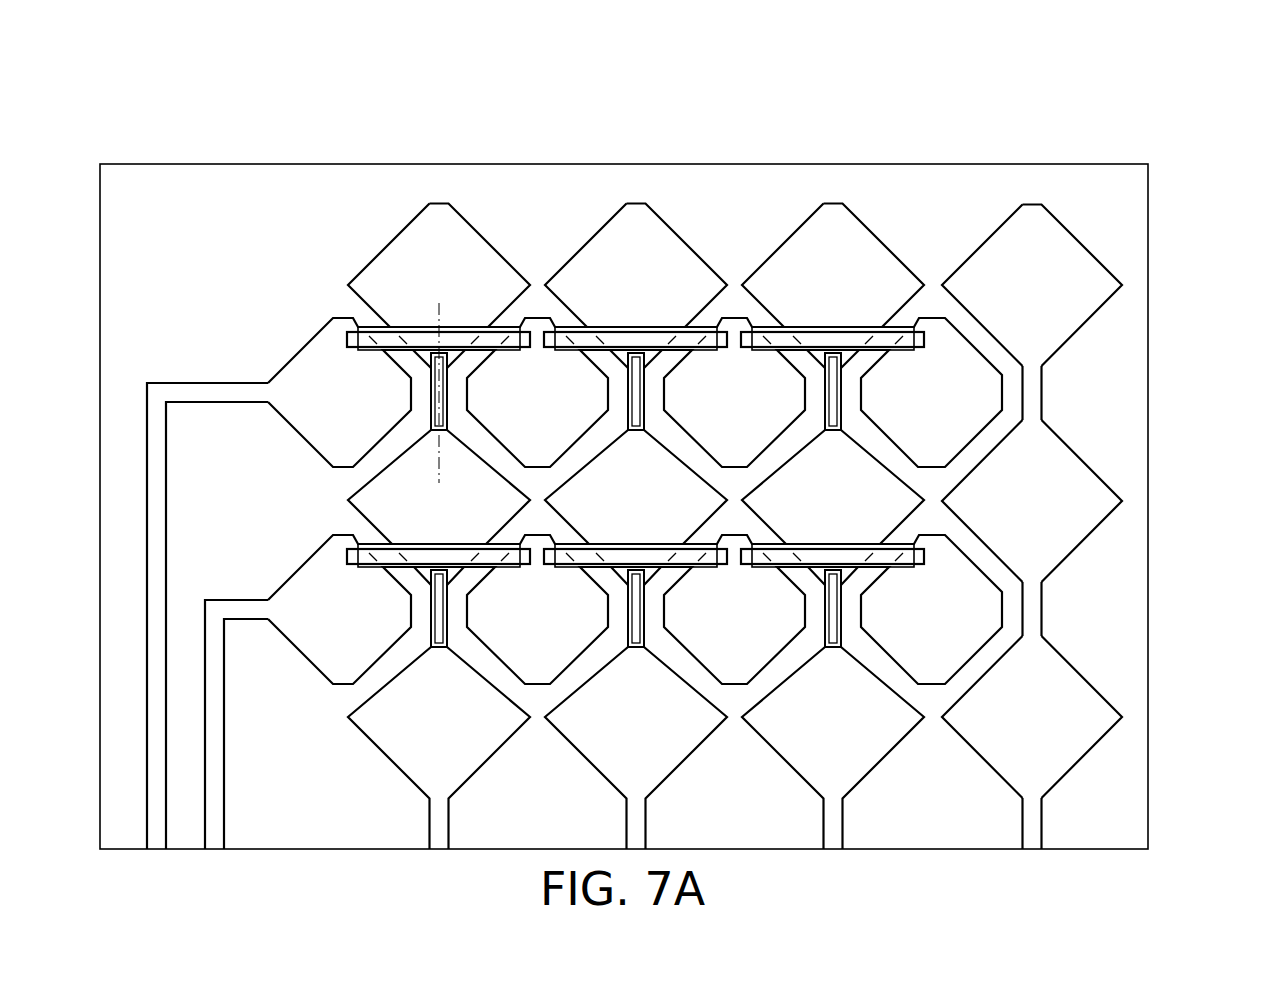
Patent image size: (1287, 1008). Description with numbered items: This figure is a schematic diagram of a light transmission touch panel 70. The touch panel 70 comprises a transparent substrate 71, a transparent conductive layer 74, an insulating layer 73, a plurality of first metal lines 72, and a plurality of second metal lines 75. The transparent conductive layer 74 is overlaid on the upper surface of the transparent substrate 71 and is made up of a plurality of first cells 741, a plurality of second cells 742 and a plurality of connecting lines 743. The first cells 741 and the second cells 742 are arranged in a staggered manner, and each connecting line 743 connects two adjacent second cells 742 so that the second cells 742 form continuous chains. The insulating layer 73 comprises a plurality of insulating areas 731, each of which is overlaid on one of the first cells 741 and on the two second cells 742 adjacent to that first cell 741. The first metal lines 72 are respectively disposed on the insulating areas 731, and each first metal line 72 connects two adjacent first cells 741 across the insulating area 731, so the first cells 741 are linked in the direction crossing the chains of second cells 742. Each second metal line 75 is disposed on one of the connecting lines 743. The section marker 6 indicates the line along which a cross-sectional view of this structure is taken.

The light transmission touch panel 70 is at (1153, 136).
The transparent substrate 71 is at (1047, 163).
The first metal line 72 is at (430, 423).
The insulating layer 73 is at (652, 302).
The insulating area 731 is at (958, 93).
The transparent conductive layer 74 is at (765, 513).
The first cell 741 is at (931, 335).
The second cell 742 is at (1080, 243).
The connecting line 743 is at (1042, 393).
The second metal line 75 is at (357, 412).
The section line 6- 6 is at (438, 300).